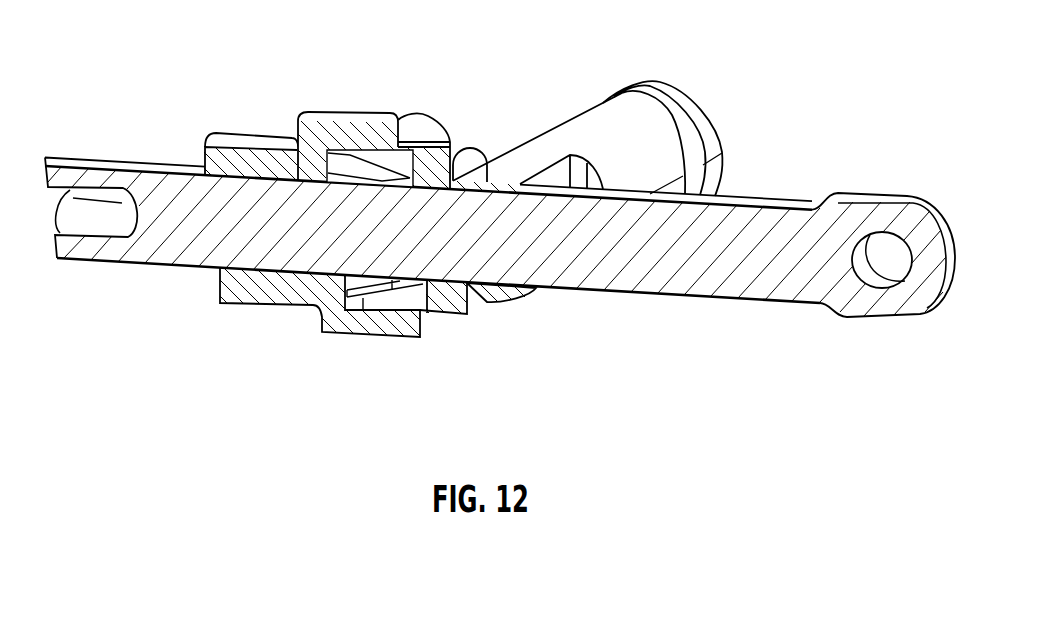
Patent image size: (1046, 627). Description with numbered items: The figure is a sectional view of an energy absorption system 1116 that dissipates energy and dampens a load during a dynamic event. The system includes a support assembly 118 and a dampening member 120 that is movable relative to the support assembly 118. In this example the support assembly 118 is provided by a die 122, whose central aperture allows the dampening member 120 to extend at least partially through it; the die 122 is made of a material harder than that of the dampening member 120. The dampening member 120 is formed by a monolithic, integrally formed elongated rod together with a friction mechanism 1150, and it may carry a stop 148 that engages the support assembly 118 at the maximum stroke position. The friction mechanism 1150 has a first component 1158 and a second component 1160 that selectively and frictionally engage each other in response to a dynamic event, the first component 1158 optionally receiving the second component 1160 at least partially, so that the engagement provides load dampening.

The dampening member 120 is at (87, 178).
The stop 148 is at (342, 118).
The first component 1158 is at (453, 147).
The die 122 is at (575, 133).
The support assembly 118 is at (648, 133).
The energy absorption system 1116 is at (806, 88).
The second component 1160 is at (358, 290).
The friction mechanism 1150 is at (437, 300).